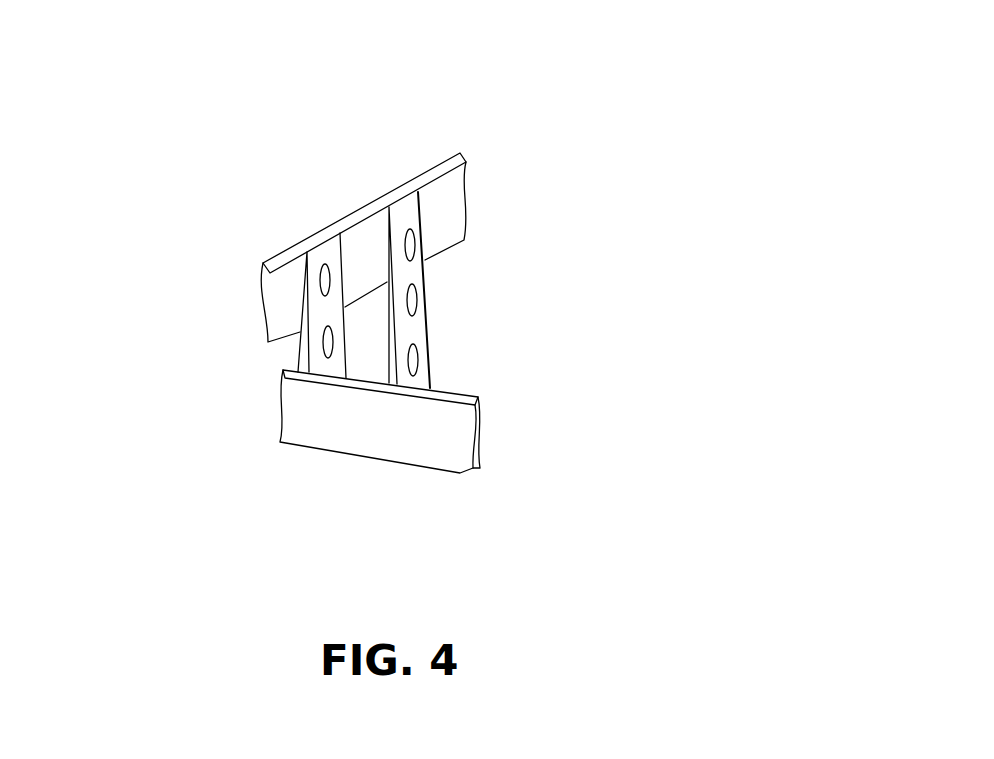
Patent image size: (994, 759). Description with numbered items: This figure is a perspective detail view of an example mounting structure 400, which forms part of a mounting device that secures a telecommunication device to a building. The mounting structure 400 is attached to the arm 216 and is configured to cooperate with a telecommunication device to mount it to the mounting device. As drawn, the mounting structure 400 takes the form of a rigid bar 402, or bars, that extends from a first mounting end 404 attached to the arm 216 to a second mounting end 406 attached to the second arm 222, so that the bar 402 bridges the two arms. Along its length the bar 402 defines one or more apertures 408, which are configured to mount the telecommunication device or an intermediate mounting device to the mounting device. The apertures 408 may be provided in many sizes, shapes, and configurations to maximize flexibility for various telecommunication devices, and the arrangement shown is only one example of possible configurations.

The mounting structure 400 is at (540, 106).
The arm 216 is at (355, 458).
The second arm 222 is at (360, 210).
The rigid bar 402 is at (377, 277).
The first mounting end 404 is at (452, 377).
The second mounting end 406 is at (447, 222).
The apertures 408 is at (418, 302).